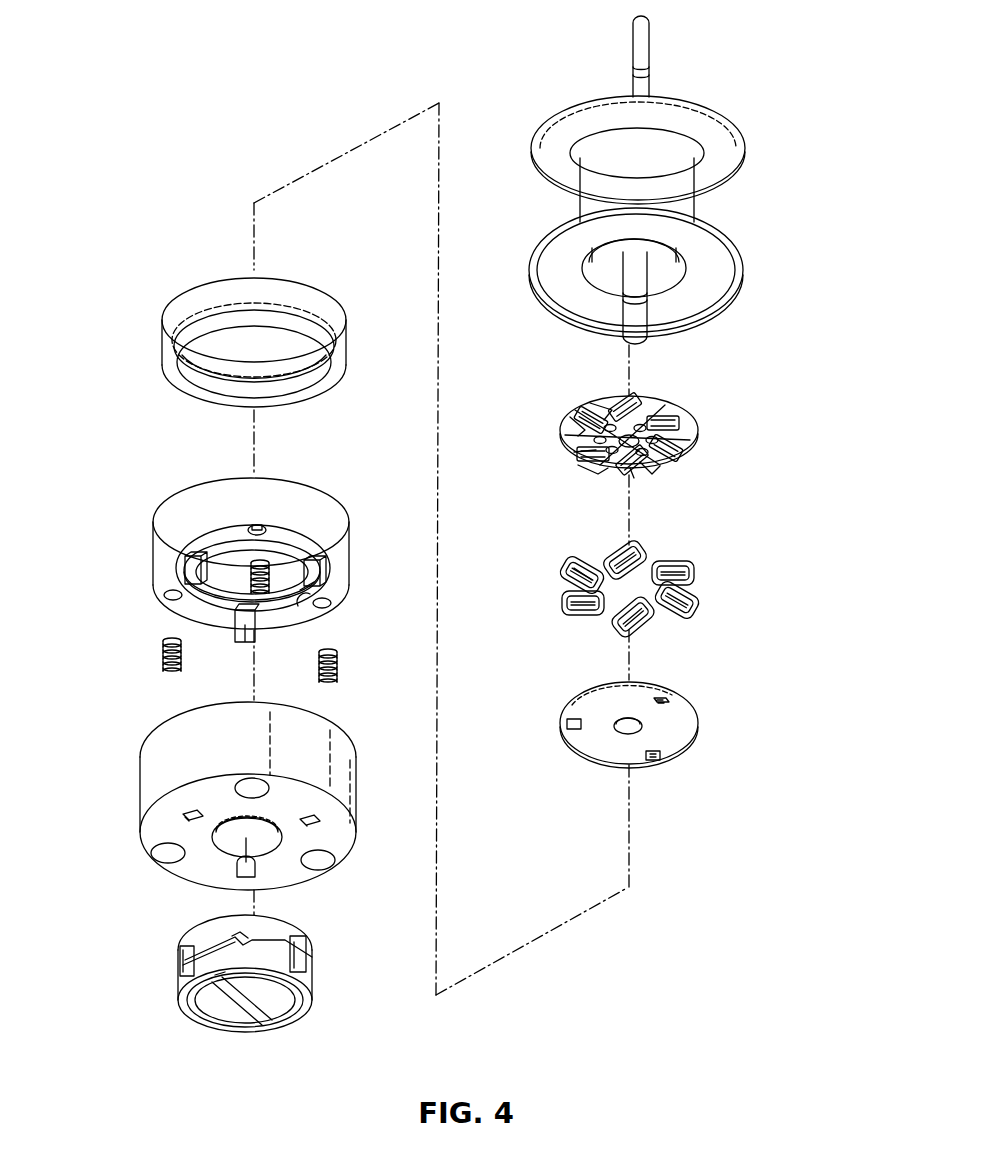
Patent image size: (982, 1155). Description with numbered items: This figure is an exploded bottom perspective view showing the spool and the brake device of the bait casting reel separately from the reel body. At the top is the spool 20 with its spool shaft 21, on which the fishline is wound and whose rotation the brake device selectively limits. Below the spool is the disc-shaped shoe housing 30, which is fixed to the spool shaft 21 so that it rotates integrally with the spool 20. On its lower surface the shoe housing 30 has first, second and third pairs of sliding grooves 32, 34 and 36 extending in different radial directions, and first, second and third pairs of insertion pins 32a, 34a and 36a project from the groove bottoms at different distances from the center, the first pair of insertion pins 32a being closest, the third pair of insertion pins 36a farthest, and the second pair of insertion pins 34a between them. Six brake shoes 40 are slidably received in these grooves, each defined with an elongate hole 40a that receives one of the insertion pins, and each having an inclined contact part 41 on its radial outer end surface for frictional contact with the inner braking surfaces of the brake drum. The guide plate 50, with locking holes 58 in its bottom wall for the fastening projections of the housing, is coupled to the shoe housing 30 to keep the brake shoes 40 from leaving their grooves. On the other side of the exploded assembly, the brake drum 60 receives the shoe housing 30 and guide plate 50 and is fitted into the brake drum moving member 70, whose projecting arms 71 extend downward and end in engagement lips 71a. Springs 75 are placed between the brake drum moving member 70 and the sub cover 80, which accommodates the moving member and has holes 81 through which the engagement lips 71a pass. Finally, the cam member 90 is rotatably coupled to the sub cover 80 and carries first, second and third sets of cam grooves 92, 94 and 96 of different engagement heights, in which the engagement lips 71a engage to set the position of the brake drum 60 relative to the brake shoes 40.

The spool 20 is at (756, 198).
The spool shaft 21 is at (655, 298).
The shoe housing 30 is at (712, 421).
The first pair of sliding grooves 32 is at (598, 413).
The first pair of insertion pins 32a is at (568, 419).
The second pair of sliding grooves 34 is at (573, 455).
The second pair of insertion pins 34a is at (580, 468).
The third pair of sliding grooves 36 is at (649, 469).
The third pair of insertion pins 36a is at (638, 477).
The brake shoes 40 is at (728, 594).
The elongate holes 40a is at (576, 560).
The contact part 41 is at (565, 567).
The guide plate 50 is at (722, 727).
The locking holes 58 is at (666, 699).
The brake drum 60 is at (125, 346).
The brake drum moving member 70 is at (112, 551).
The projecting arms 71 is at (318, 570).
The engagement lips 71a is at (318, 608).
The springs 75 is at (160, 658).
The sub cover 80 is at (120, 809).
The holes 81 is at (318, 822).
The cam member 90 is at (148, 984).
The first set of cam grooves 92 is at (180, 958).
The second set of cam grooves 94 is at (238, 938).
The third set of cam grooves 96 is at (302, 945).